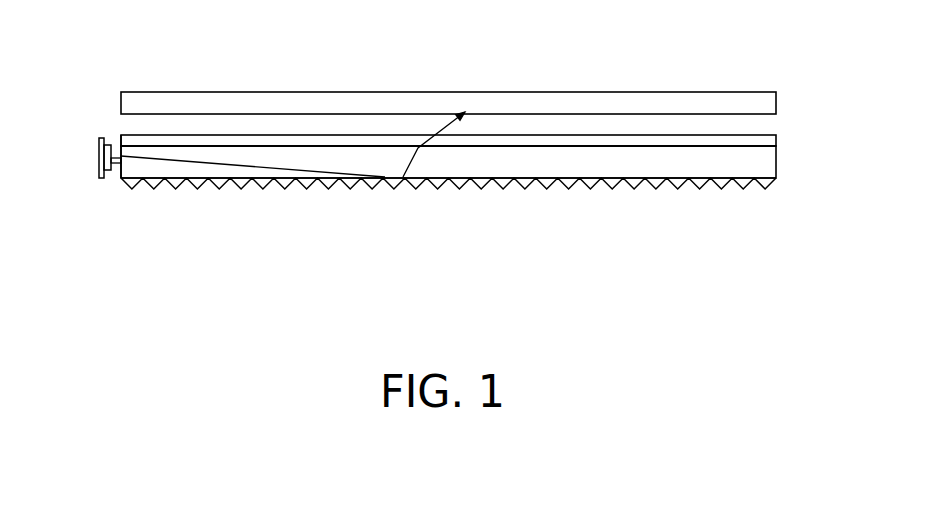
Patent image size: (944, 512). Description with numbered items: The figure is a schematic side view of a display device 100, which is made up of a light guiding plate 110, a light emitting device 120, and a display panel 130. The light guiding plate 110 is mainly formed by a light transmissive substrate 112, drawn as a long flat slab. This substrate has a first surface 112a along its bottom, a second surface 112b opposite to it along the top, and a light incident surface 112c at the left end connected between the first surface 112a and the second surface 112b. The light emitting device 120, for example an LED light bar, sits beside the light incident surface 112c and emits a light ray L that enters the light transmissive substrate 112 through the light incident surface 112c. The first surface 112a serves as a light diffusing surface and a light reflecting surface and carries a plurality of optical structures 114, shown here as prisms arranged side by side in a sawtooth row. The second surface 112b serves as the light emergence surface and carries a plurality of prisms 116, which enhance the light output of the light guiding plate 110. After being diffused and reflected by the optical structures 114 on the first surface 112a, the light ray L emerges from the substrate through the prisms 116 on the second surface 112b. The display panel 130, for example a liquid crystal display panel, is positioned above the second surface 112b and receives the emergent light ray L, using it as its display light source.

The display device 100 is at (461, 141).
The light guiding plate 110 is at (487, 140).
The light transmissive substrate 112 is at (768, 162).
The first surface 112a is at (240, 178).
The second surface 112b is at (193, 146).
The light incident surface 112c is at (121, 166).
The optical structures 114 is at (612, 179).
The prisms 116 is at (568, 140).
The light emitting device 120 is at (99, 156).
The display panel 130 is at (768, 104).
The light ray L is at (287, 170).